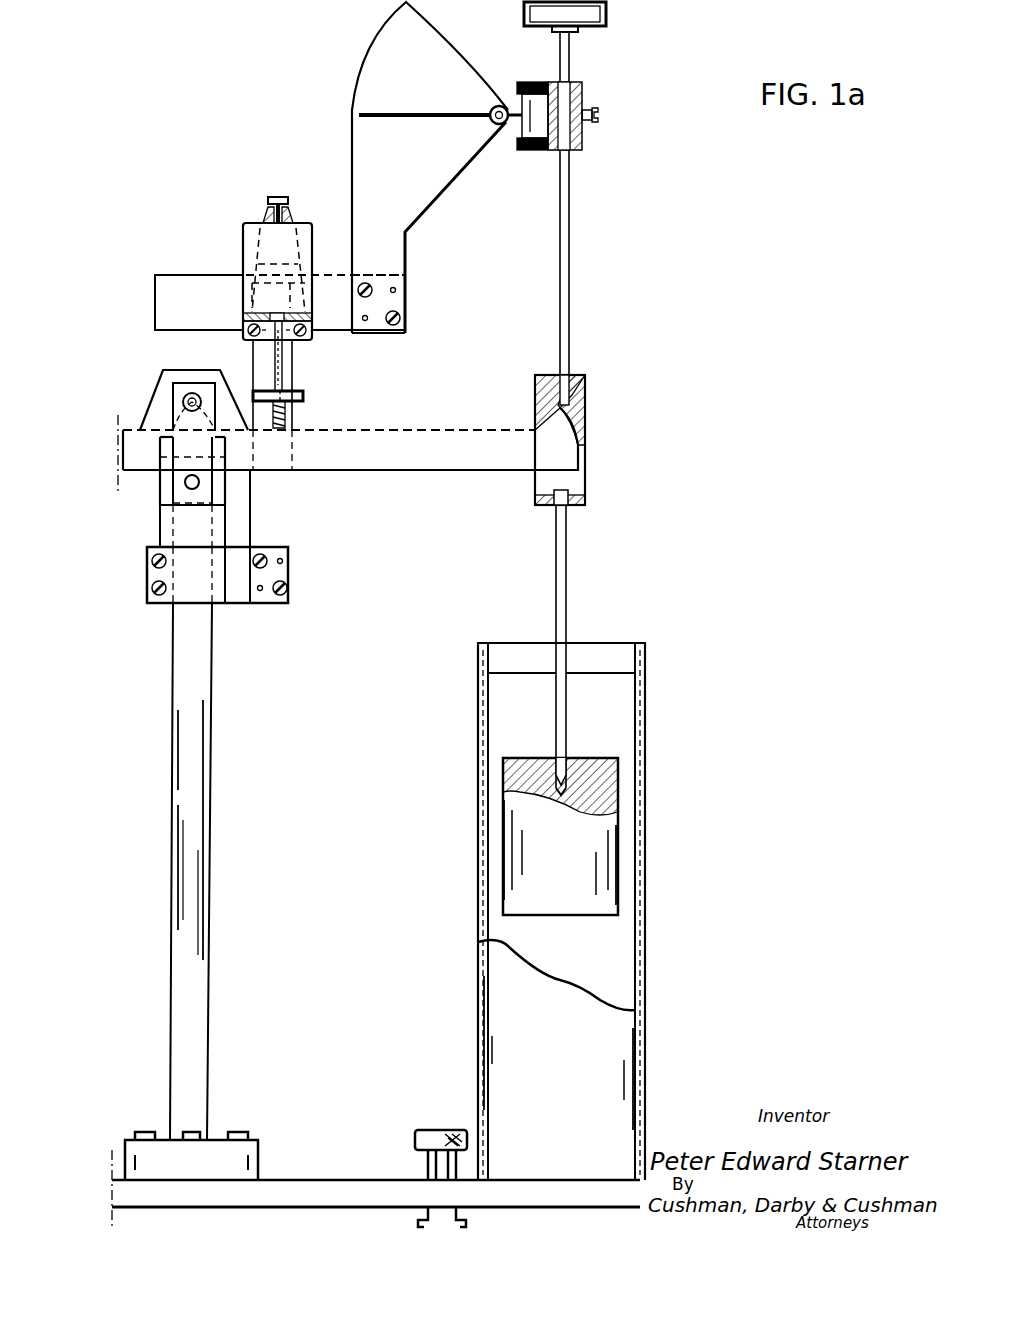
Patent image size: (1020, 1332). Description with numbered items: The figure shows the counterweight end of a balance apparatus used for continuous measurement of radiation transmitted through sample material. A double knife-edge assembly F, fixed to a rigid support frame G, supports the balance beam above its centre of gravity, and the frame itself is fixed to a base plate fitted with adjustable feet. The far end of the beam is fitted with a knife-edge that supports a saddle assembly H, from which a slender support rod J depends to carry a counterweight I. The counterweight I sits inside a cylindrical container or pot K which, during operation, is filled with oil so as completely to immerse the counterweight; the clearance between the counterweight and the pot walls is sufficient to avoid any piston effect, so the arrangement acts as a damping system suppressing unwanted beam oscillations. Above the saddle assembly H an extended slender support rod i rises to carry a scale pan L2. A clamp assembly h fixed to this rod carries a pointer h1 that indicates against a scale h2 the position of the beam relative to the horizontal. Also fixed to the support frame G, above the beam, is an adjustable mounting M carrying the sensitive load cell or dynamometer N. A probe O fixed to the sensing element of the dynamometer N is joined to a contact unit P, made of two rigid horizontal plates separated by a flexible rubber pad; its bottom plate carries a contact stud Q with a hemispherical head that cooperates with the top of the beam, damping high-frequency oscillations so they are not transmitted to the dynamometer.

The scale pan L2 is at (592, 14).
The extended slender support rod i is at (571, 298).
The clamp assembly h is at (583, 140).
The pointer h1 is at (441, 118).
The scale h2 is at (406, 70).
The adjustable mounting M is at (190, 287).
The load cell or dynamometer N is at (240, 240).
The probe O is at (282, 353).
The contact unit P is at (305, 396).
The contact stud Q is at (286, 420).
The double knife-edge assembly F is at (152, 400).
The rigid support frame G is at (282, 603).
The saddle assembly H is at (586, 410).
The slender support rod J is at (568, 610).
The cylindrical container or pot K is at (616, 1055).
The counterweight I is at (613, 885).